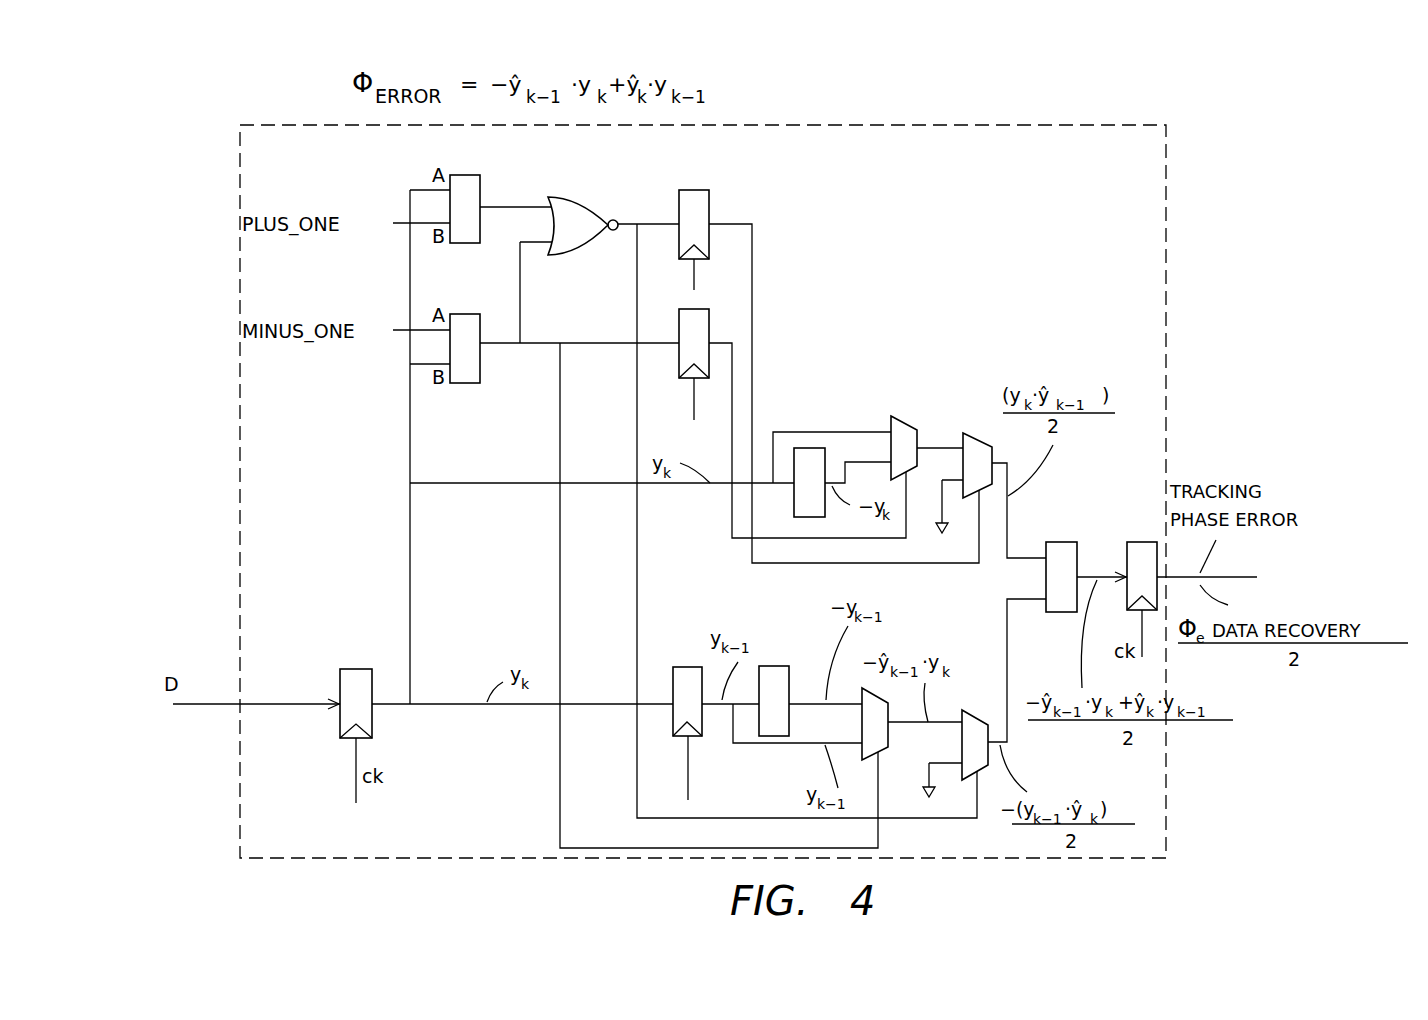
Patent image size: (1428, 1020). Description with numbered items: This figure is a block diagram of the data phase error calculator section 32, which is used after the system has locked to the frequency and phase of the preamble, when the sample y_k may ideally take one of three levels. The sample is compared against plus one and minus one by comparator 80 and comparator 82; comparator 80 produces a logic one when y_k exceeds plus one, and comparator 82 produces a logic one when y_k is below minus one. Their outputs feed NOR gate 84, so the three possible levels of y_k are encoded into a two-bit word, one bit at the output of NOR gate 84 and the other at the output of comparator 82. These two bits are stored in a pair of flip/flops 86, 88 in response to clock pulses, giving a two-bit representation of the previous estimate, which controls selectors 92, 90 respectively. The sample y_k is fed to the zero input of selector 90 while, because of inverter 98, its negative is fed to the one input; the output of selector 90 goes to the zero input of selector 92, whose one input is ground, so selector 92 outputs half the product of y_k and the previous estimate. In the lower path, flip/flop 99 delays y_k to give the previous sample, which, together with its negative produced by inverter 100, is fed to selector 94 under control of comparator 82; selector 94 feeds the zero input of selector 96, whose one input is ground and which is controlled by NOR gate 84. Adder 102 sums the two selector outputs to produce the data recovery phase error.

The data phase error calculator section 32 is at (316, 124).
The comparator 80 is at (482, 190).
The comparator 82 is at (464, 383).
The NOR gate 84 is at (549, 197).
The flip/flop 86 is at (692, 190).
The flip/flop 88 is at (672, 378).
The selector 90 is at (893, 416).
The selector 92 is at (964, 434).
The selector 94 is at (890, 735).
The selector 96 is at (968, 712).
The inverter 98 is at (793, 492).
The flip/flop 99 is at (694, 667).
The inverter 100 is at (776, 666).
The adder 102 is at (1062, 542).